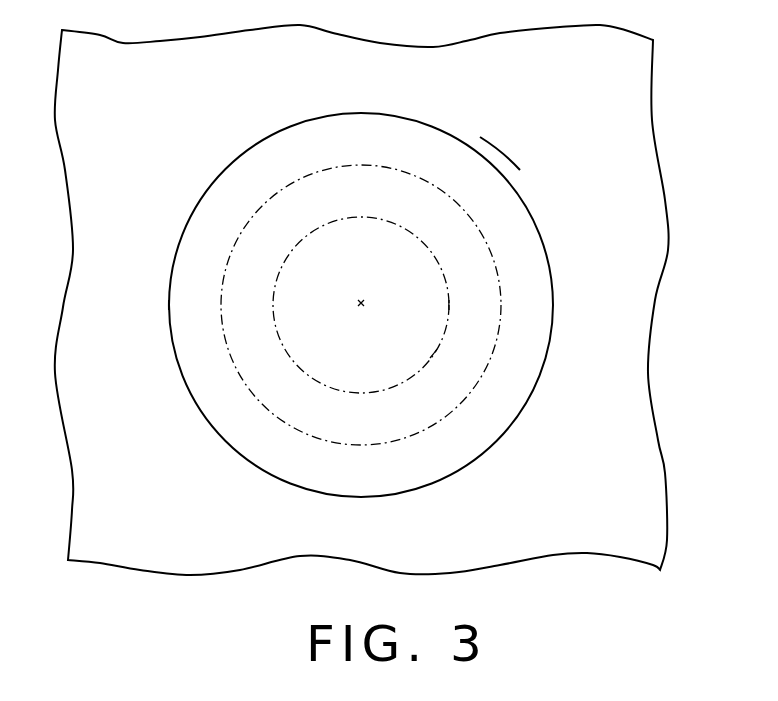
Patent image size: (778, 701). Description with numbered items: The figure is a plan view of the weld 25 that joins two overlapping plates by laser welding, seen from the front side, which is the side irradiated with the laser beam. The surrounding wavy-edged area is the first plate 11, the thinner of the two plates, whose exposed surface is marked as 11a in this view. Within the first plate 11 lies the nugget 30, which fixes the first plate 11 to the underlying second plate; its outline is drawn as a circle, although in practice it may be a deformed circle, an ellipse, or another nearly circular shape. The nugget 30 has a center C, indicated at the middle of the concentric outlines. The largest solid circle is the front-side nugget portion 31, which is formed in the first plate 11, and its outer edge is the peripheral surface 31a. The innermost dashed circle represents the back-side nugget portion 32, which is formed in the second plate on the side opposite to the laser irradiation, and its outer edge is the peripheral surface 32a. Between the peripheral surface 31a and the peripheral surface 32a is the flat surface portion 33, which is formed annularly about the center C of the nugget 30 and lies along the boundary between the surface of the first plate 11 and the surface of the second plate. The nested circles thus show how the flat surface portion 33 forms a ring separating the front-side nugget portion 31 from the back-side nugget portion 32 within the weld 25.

The first plate 11 is at (650, 210).
The surface of base plate 11a is at (192, 104).
The weld 25 is at (503, 143).
The nugget 30 is at (465, 249).
The front-side nugget portion 31 is at (358, 131).
The peripheral surface of the front-side nugget portion 31a is at (170, 320).
The back-side nugget portion 32 is at (362, 367).
The peripheral surface of the back-side nugget portion 32a is at (437, 350).
The flat surface portion 33 is at (473, 285).
The center of the nugget C is at (361, 302).